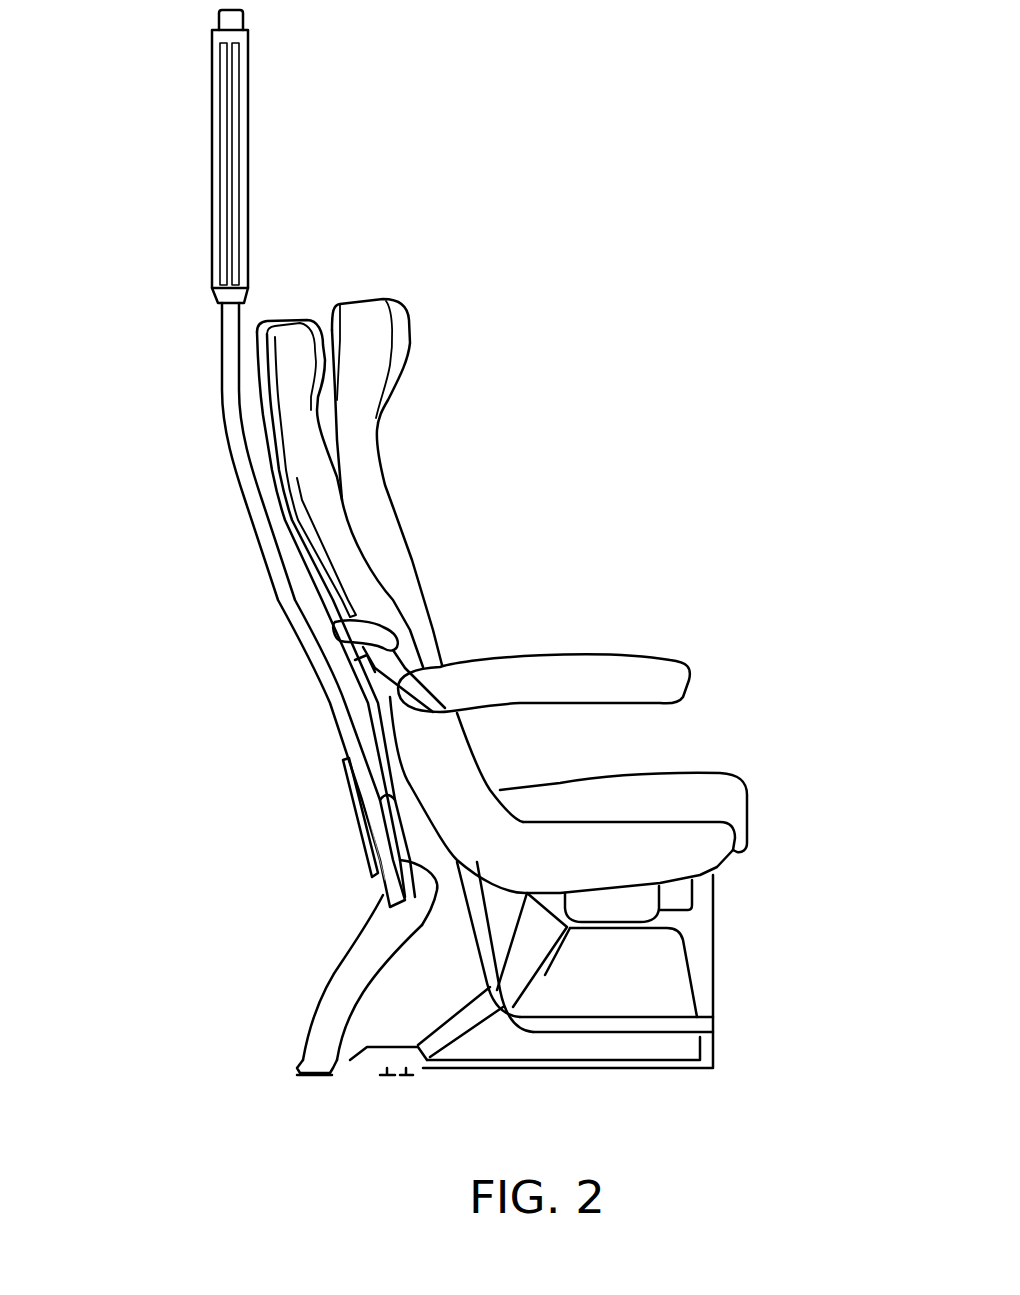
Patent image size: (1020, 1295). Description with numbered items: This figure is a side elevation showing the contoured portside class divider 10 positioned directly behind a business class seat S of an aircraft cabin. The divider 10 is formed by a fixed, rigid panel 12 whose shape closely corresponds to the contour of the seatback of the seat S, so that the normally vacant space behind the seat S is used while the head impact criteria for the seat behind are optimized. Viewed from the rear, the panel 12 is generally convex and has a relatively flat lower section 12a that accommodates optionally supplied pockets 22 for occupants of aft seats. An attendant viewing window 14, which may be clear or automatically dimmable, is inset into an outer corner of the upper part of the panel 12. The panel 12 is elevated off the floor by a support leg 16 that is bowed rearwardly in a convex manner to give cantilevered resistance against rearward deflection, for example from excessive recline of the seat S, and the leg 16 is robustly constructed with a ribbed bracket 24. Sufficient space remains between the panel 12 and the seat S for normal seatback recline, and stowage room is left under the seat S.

The contoured portside class divider 10 is at (157, 282).
The panel 12 is at (236, 392).
The lower section 12a is at (330, 728).
The attendant viewing window 14 is at (218, 140).
The support leg 16 is at (330, 1013).
The pockets 22 is at (343, 790).
The ribbed bracket 24 is at (403, 870).
The seat S is at (462, 518).